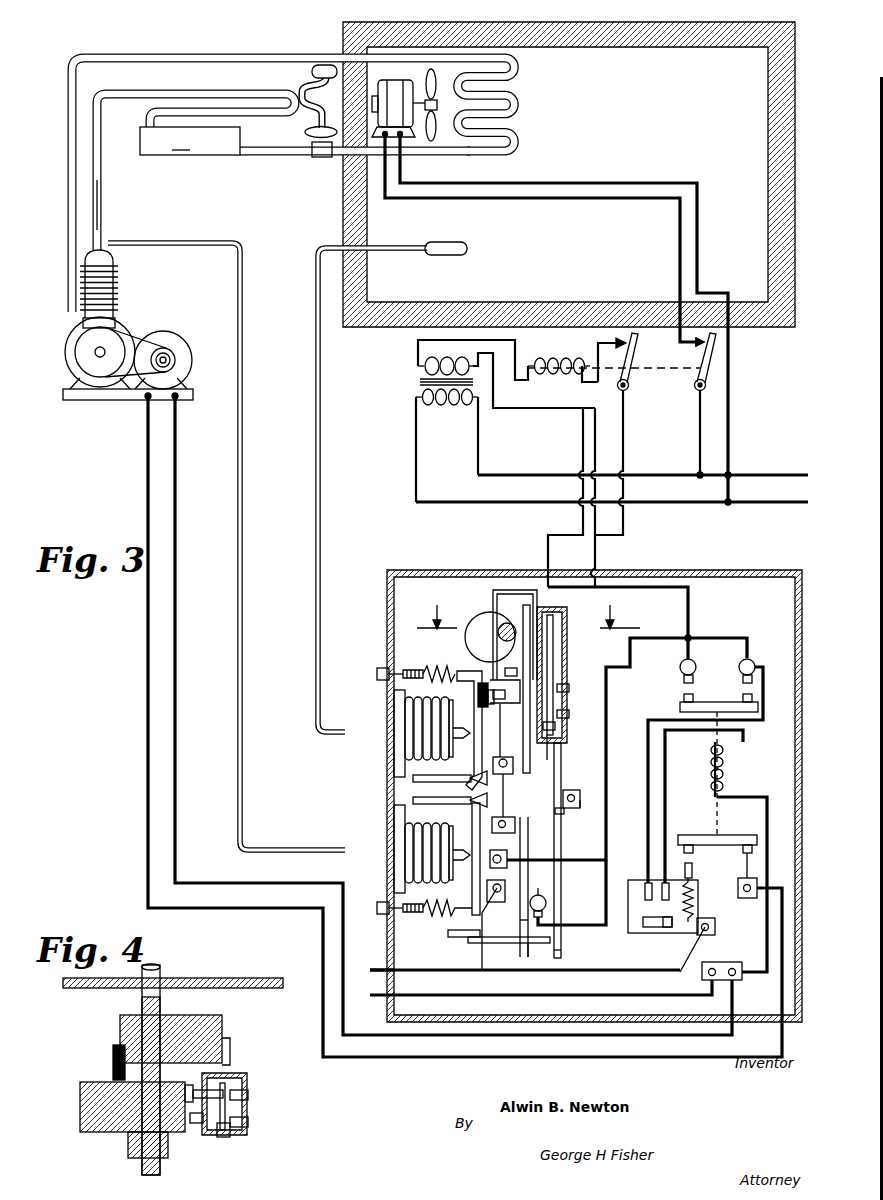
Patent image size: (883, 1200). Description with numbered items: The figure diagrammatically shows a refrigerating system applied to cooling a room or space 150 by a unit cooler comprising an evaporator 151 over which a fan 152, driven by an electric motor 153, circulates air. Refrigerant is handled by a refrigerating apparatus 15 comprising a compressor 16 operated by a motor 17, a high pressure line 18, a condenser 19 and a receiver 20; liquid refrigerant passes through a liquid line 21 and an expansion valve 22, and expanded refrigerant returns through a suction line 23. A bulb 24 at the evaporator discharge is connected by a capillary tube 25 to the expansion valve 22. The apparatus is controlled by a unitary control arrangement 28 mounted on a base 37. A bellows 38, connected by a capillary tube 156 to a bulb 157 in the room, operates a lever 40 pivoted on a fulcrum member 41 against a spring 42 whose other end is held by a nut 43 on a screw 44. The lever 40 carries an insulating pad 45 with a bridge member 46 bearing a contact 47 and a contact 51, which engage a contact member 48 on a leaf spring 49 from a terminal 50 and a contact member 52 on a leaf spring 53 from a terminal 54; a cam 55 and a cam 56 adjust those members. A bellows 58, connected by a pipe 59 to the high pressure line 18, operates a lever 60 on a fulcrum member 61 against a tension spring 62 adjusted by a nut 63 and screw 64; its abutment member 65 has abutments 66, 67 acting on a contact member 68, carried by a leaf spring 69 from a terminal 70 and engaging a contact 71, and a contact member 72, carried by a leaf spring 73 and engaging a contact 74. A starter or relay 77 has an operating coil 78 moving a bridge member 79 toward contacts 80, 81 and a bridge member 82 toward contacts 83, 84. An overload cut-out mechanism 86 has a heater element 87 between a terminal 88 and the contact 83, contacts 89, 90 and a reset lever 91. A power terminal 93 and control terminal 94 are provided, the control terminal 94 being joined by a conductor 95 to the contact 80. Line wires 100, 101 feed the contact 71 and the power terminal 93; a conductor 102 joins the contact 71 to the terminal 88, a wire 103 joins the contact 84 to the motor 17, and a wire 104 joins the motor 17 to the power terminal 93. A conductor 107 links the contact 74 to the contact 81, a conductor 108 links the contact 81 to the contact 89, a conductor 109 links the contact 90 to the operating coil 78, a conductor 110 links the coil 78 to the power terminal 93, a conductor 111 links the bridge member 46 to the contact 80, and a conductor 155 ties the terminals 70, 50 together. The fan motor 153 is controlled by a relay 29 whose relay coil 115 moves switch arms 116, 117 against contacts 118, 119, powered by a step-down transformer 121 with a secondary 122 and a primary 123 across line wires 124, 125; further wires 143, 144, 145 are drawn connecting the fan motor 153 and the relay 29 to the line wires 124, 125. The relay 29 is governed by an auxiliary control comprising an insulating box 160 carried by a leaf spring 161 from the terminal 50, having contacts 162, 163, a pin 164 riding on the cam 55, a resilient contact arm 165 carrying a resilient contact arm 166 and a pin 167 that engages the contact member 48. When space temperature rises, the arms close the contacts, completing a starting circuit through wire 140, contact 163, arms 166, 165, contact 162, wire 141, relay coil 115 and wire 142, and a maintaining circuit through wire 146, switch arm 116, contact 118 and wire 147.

In FIG. 3, the refrigerating apparatus 15 is at (132, 324).
In FIG. 3, the compressor 16 is at (112, 257).
In FIG. 3, the motor 17 is at (172, 340).
In FIG. 3, the high pressure line 18 is at (103, 207).
In FIG. 3, the condenser 19 is at (198, 97).
In FIG. 3, the receiver 20 is at (190, 141).
In FIG. 3, the liquid line 21 is at (276, 152).
In FIG. 3, the expansion valve 22 is at (320, 158).
In FIG. 3, the suction line 23 is at (86, 56).
In FIG. 3, the bulb 24 is at (326, 58).
In FIG. 3, the capillary tube 25 is at (300, 76).
In FIG. 3, the unitary control arrangement 28 is at (567, 772).
In FIG. 3, the relay 29 is at (575, 457).
In FIG. 3, the base 37 is at (372, 552).
In FIG. 4, the base 37 is at (226, 976).
In FIG. 3, the bellows 38 is at (432, 730).
In FIG. 3, the lever 40 is at (472, 694).
In FIG. 3, the fulcrum member 41 is at (412, 778).
In FIG. 3, the spring 42 is at (439, 668).
In FIG. 3, the nut 43 is at (412, 668).
In FIG. 3, the screw 44 is at (377, 670).
In FIG. 3, the insulating pad 45 is at (482, 672).
In FIG. 4, the insulating pad 45 is at (113, 1056).
In FIG. 3, the bridge member 46 is at (491, 705).
In FIG. 3, the contact 47 is at (491, 717).
In FIG. 3, the contact member 48 is at (512, 704).
In FIG. 4, the contact member 48 is at (189, 1085).
In FIG. 3, the leaf spring 49 is at (512, 742).
In FIG. 3, the terminal 50 is at (513, 772).
In FIG. 3, the contact 51 is at (507, 667).
In FIG. 3, the contact member 52 is at (561, 757).
In FIG. 4, the contact member 52 is at (230, 1045).
In FIG. 3, the leaf spring 53 is at (575, 790).
In FIG. 3, the terminal 54 is at (576, 808).
In FIG. 3, the cam 55 is at (468, 615).
In FIG. 4, the cam 55 is at (80, 1104).
In FIG. 3, the cam 56 is at (494, 604).
In FIG. 4, the cam 56 is at (120, 1028).
In FIG. 3, the bellows 58 is at (472, 882).
In FIG. 3, the pipe 59 is at (243, 811).
In FIG. 3, the lever 60 is at (466, 822).
In FIG. 3, the fulcrum member 61 is at (445, 798).
In FIG. 3, the tension spring 62 is at (443, 915).
In FIG. 3, the nut 63 is at (410, 914).
In FIG. 3, the screw 64 is at (378, 910).
In FIG. 3, the abutment member 65 is at (462, 940).
In FIG. 3, the abutment 66 is at (512, 943).
In FIG. 3, the abutment 67 is at (536, 952).
In FIG. 3, the contact member 68 is at (519, 921).
In FIG. 3, the leaf spring 69 is at (528, 835).
In FIG. 3, the terminal 70 is at (512, 818).
In FIG. 3, the contact 71 is at (495, 884).
In FIG. 3, the contact member 72 is at (561, 946).
In FIG. 3, the leaf spring 73 is at (556, 812).
In FIG. 3, the contact 74 is at (539, 892).
In FIG. 3, the starter or relay 77 is at (672, 779).
In FIG. 3, the operating coil 78 is at (723, 766).
In FIG. 3, the bridge member 79 is at (708, 703).
In FIG. 3, the contact 80 is at (693, 662).
In FIG. 3, the contact 81 is at (740, 660).
In FIG. 3, the bridge member 82 is at (724, 835).
In FIG. 3, the contact 83 is at (696, 863).
In FIG. 3, the contact 84 is at (748, 870).
In FIG. 3, the overload cut-out mechanism 86 is at (669, 904).
In FIG. 3, the heater element 87 is at (694, 898).
In FIG. 3, the terminal 88 is at (716, 921).
In FIG. 3, the contact 89 is at (648, 882).
In FIG. 3, the contact 90 is at (666, 882).
In FIG. 3, the reset lever 91 is at (664, 928).
In FIG. 3, the power terminal 93 is at (714, 962).
In FIG. 3, the control terminal 94 is at (491, 856).
In FIG. 3, the conductor 95 is at (574, 860).
In FIG. 3, the line wire 100 is at (382, 968).
In FIG. 3, the line wire 101 is at (380, 996).
In FIG. 3, the conductor 102 is at (550, 972).
In FIG. 3, the wire 103 is at (146, 440).
In FIG. 3, the wire 104 is at (176, 436).
In FIG. 3, the conductor 107 is at (578, 925).
In FIG. 3, the conductor 108 is at (764, 698).
In FIG. 3, the conductor 109 is at (744, 734).
In FIG. 3, the conductor 110 is at (740, 796).
In FIG. 3, the conductor 111 is at (689, 598).
In FIG. 3, the relay coil 115 is at (554, 350).
In FIG. 3, the switch arm 116 is at (636, 353).
In FIG. 3, the switch arm 117 is at (694, 380).
In FIG. 3, the contact 118 is at (602, 340).
In FIG. 3, the contact 119 is at (696, 342).
In FIG. 3, the step-down transformer 121 is at (410, 385).
In FIG. 3, the secondary 122 is at (432, 357).
In FIG. 3, the primary 123 is at (404, 377).
In FIG. 3, the line wire 124 is at (760, 474).
In FIG. 3, the line wire 125 is at (760, 501).
In FIG. 3, the wire 140 is at (512, 408).
In FIG. 3, the wire 141 is at (582, 444).
In FIG. 3, the wire 142 is at (415, 343).
In FIG. 3, the wire 143 is at (699, 444).
In FIG. 3, the wire 144 is at (582, 200).
In FIG. 3, the wire 145 is at (729, 256).
In FIG. 3, the wire 146 is at (548, 545).
In FIG. 3, the wire 147 is at (590, 386).
In FIG. 3, the room or space 150 is at (768, 108).
In FIG. 3, the evaporator 151 is at (517, 110).
In FIG. 3, the fan 152 is at (433, 142).
In FIG. 3, the electric motor 153 is at (404, 80).
In FIG. 3, the conductor 155 is at (504, 790).
In FIG. 3, the capillary tube 156 is at (316, 698).
In FIG. 3, the bulb 157 is at (445, 242).
In FIG. 3, the box 160 is at (567, 733).
In FIG. 4, the box 160 is at (247, 1132).
In FIG. 3, the leaf spring 161 is at (550, 751).
In FIG. 3, the contact 162 is at (569, 690).
In FIG. 4, the contact 162 is at (248, 1094).
In FIG. 3, the contact 163 is at (569, 717).
In FIG. 4, the contact 163 is at (248, 1120).
In FIG. 3, the pin 164 is at (509, 623).
In FIG. 4, the pin 164 is at (196, 1123).
In FIG. 3, the resilient contact arm 165 is at (552, 616).
In FIG. 4, the resilient contact arm 165 is at (225, 1086).
In FIG. 3, the resilient contact arm 166 is at (548, 730).
In FIG. 4, the resilient contact arm 166 is at (224, 1137).
In FIG. 3, the pin 167 is at (545, 600).
In FIG. 4, the pin 167 is at (223, 1090).